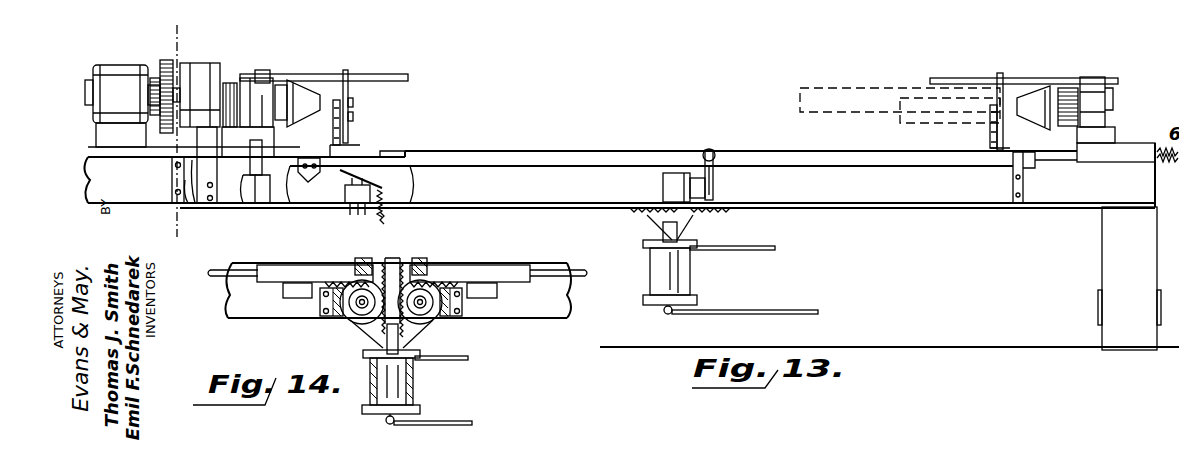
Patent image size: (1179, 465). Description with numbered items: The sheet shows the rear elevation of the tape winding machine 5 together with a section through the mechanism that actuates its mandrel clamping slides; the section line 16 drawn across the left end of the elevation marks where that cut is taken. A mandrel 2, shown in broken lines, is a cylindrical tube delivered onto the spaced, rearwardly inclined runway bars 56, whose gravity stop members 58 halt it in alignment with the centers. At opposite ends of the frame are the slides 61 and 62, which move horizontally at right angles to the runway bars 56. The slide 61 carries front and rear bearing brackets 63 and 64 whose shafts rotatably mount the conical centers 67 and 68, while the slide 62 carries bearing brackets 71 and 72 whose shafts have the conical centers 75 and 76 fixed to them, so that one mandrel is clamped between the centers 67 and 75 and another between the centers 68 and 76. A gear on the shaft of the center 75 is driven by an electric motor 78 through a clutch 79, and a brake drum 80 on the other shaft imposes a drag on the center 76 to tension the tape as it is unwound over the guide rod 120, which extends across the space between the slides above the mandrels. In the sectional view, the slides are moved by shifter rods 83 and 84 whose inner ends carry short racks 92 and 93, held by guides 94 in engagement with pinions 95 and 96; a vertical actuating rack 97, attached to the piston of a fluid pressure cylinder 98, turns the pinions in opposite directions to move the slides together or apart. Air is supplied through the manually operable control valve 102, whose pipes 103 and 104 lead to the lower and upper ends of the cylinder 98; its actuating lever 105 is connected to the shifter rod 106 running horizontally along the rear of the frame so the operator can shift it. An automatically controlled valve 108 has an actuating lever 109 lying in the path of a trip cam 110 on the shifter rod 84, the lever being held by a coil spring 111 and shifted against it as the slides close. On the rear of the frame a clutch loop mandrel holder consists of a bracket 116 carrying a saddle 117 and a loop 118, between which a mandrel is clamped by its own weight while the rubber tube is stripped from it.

In FIG. 13, the mandrel 2 is at (806, 88).
In FIG. 13, the tape winding machine 5 is at (1102, 262).
In FIG. 13, the section line 16 is at (196, 228).
In FIG. 13, the runway bars 56 is at (353, 118).
In FIG. 13, the gravity stop members 58 is at (353, 103).
In FIG. 13, the slide 61 is at (1113, 160).
In FIG. 13, the slide 62 is at (161, 148).
In FIG. 13, the front bearing bracket 63 is at (1082, 90).
In FIG. 13, the rear bearing bracket 64 is at (1110, 100).
In FIG. 13, the conical center 67 is at (1025, 95).
In FIG. 13, the conical center 68 is at (1035, 106).
In FIG. 13, the front bearing bracket 71 is at (251, 88).
In FIG. 13, the rear bearing bracket 72 is at (265, 86).
In FIG. 13, the conical center 75 is at (300, 100).
In FIG. 13, the conical center 76 is at (306, 95).
In FIG. 13, the electric motor 78 is at (116, 106).
In FIG. 13, the clutch 79 is at (205, 76).
In FIG. 13, the brake drum 80 is at (231, 86).
In FIG. 14, the shifter rod 83 is at (585, 273).
In FIG. 14, the shifter rod 84 is at (216, 277).
In FIG. 14, the rack 92 is at (489, 271).
In FIG. 14, the rack 93 is at (286, 273).
In FIG. 14, the guides 94 is at (283, 290).
In FIG. 13, the pinion 95 is at (711, 210).
In FIG. 14, the pinion 95 is at (433, 318).
In FIG. 13, the pinion 96 is at (634, 210).
In FIG. 14, the pinion 96 is at (353, 318).
In FIG. 14, the actuating rack 97 is at (398, 262).
In FIG. 13, the fluid pressure cylinder 98 is at (697, 275).
In FIG. 14, the fluid pressure cylinder 98 is at (420, 390).
In FIG. 13, the manually operable control valve 102 is at (663, 182).
In FIG. 13, the pipe 103 is at (800, 315).
In FIG. 14, the pipe 103 is at (462, 426).
In FIG. 13, the pipe 104 is at (778, 250).
In FIG. 14, the pipe 104 is at (470, 360).
In FIG. 13, the actuating lever 105 is at (716, 180).
In FIG. 13, the shifter rod 106 is at (776, 156).
In FIG. 13, the automatically controlled valve 108 is at (346, 212).
In FIG. 13, the actuating lever 109 is at (387, 157).
In FIG. 13, the trip cam 110 is at (300, 173).
In FIG. 13, the coil spring 111 is at (388, 212).
In FIG. 13, the bracket 116 is at (238, 205).
In FIG. 13, the saddle 117 is at (257, 196).
In FIG. 13, the loop 118 is at (200, 203).
In FIG. 13, the guide rod 120 is at (405, 75).